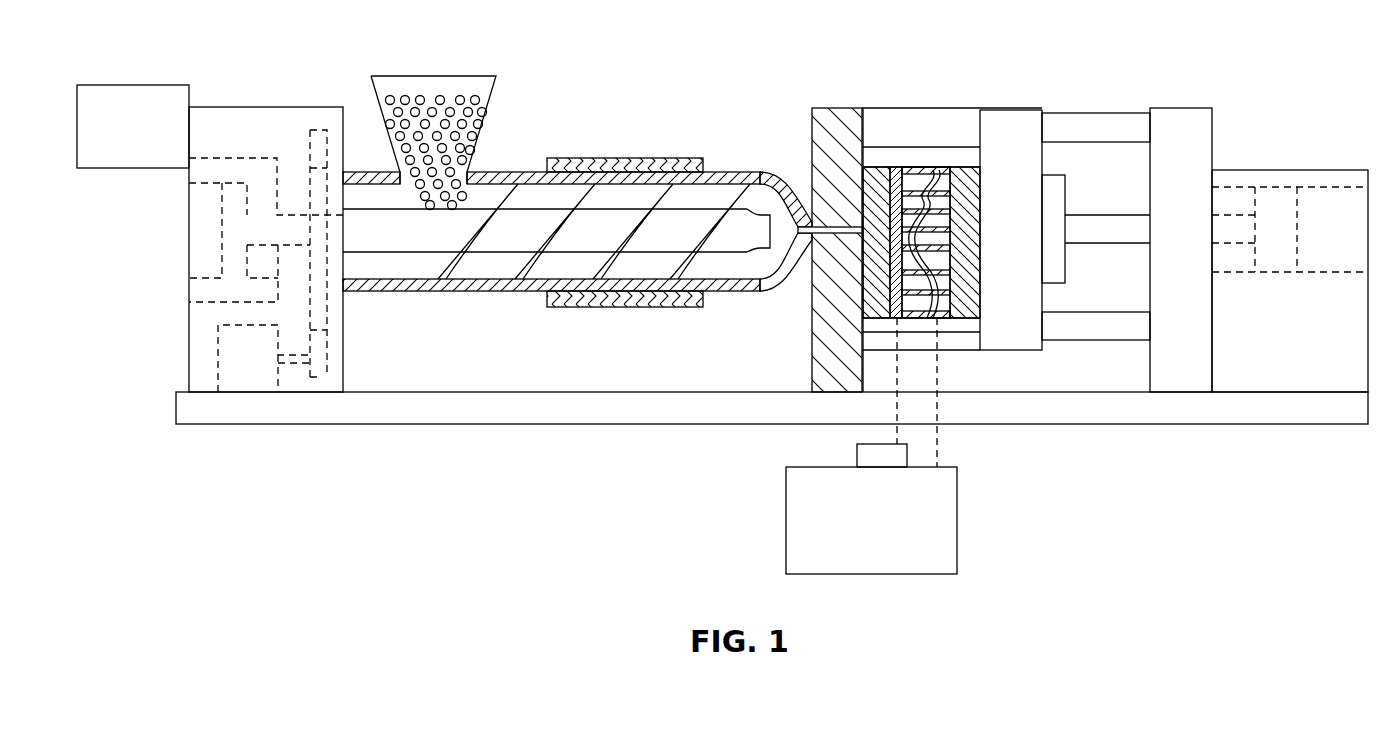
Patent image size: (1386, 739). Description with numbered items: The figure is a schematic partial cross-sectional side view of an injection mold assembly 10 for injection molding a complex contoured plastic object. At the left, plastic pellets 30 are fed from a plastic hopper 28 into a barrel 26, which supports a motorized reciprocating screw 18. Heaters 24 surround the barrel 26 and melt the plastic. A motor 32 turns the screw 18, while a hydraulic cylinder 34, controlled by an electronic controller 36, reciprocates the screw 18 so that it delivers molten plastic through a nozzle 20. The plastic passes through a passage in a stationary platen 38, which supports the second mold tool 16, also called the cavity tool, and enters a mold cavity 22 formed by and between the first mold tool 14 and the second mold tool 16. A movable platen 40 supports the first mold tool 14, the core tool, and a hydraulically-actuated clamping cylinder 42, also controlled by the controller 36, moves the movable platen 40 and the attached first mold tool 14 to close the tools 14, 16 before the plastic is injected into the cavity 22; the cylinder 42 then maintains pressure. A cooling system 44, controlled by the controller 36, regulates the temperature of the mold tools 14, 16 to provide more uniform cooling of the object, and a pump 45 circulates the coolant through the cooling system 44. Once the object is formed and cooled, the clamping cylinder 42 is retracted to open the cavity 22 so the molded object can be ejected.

The injection mold assembly 10 is at (1245, 26).
The first mold tool 14 is at (956, 162).
The second mold tool 16 is at (901, 162).
The motorized reciprocating screw 18 is at (615, 220).
The nozzle 20 is at (815, 222).
The mold cavity 22 is at (930, 173).
The heaters 24 is at (607, 158).
The barrel 26 is at (539, 171).
The plastic hopper 28 is at (385, 102).
The plastic pellets 30 is at (470, 115).
The motor 32 is at (228, 352).
The hydraulic cylinder 34 is at (203, 222).
The electronic controller 36 is at (134, 85).
The stationary platen 38 is at (830, 108).
The movable platen 40 is at (1032, 108).
The hydraulically-actuated clamping cylinder 42 is at (1277, 188).
The cooling system 44 is at (786, 522).
The pump 45 is at (857, 457).